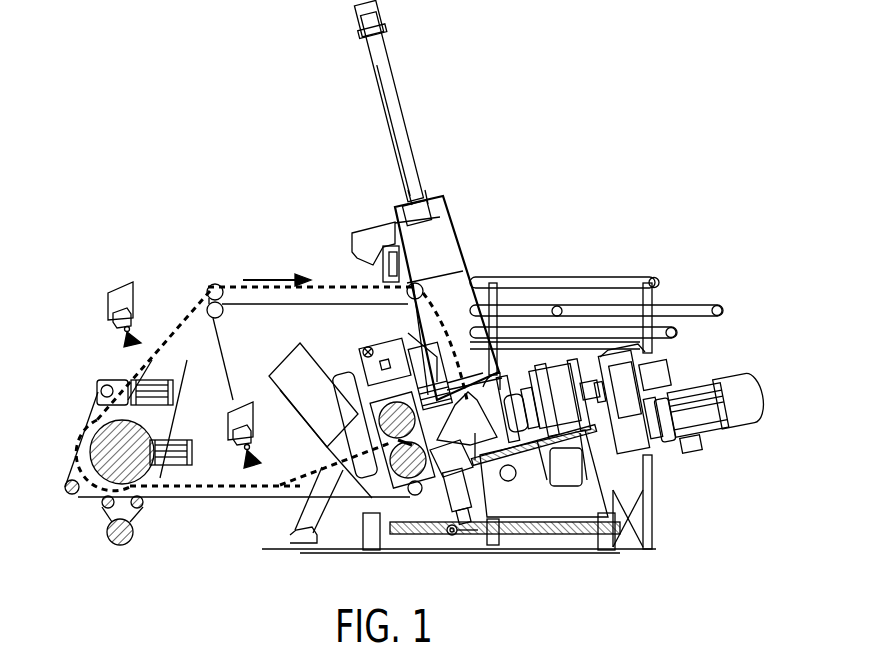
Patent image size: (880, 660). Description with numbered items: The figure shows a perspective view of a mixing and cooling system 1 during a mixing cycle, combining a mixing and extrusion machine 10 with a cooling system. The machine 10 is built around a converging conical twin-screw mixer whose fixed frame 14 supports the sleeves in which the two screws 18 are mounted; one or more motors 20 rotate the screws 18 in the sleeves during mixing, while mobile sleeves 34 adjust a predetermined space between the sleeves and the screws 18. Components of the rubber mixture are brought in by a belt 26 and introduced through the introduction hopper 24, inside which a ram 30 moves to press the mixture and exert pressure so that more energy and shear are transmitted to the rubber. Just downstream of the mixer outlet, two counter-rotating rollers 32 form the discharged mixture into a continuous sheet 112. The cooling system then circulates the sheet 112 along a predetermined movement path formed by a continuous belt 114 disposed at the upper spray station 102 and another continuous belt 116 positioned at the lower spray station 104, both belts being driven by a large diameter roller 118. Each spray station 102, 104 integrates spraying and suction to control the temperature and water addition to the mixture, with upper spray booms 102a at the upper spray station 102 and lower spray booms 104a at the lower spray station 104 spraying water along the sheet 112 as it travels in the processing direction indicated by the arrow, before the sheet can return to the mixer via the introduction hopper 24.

The mixing and cooling system 1 is at (202, 130).
The mixing and extrusion machine 10 is at (405, 48).
The ram 30 is at (412, 148).
The introduction hopper 24 is at (450, 280).
The belt 26 is at (550, 280).
The motor 20 is at (742, 393).
The fixed frame 14 is at (582, 497).
The screws 18 is at (472, 435).
The mobile sleeves 34 is at (425, 390).
The counter-rotating rollers 32 is at (390, 440).
The continuous sheet 112 is at (344, 482).
The continuous belt 114 is at (229, 284).
The continuous belt 116 is at (257, 497).
The large diameter roller 118 is at (107, 470).
The upper spray station 102 is at (118, 288).
The upper spray boom 102a is at (122, 326).
The lower spray station 104 is at (233, 400).
The lower spray boom 104a is at (247, 447).